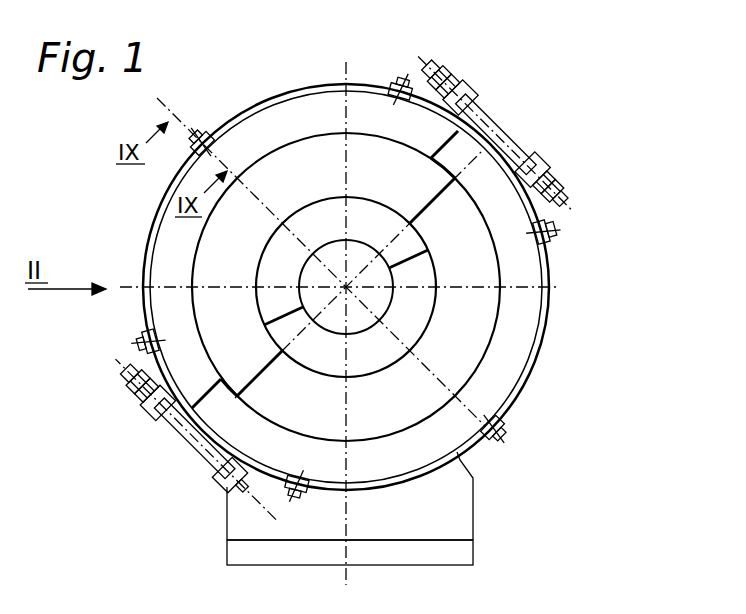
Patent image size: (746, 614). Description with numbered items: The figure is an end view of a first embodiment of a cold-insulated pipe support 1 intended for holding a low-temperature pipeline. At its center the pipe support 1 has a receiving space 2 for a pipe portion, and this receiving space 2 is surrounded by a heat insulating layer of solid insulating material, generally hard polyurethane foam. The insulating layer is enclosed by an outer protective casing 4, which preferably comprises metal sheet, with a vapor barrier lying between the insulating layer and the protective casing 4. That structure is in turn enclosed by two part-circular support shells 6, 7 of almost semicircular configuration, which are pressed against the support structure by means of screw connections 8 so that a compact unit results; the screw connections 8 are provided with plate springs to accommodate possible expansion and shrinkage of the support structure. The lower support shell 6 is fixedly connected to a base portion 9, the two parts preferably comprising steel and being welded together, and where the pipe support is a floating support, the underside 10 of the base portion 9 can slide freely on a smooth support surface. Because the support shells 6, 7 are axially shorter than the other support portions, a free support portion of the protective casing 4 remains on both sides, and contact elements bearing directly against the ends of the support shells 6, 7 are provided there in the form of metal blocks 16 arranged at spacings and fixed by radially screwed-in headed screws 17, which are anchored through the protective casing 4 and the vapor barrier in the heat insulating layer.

The pipe support 1 is at (608, 198).
The receiving space 2 is at (383, 297).
The outer protective casing 4 is at (498, 158).
The lower support shell 6 is at (510, 405).
The upper support shell 7 is at (278, 95).
The screw connections 8 is at (498, 120).
The base portion 9 is at (452, 517).
The underside 10 is at (445, 565).
The metal blocks 16 is at (548, 247).
The headed screws 17 is at (553, 229).